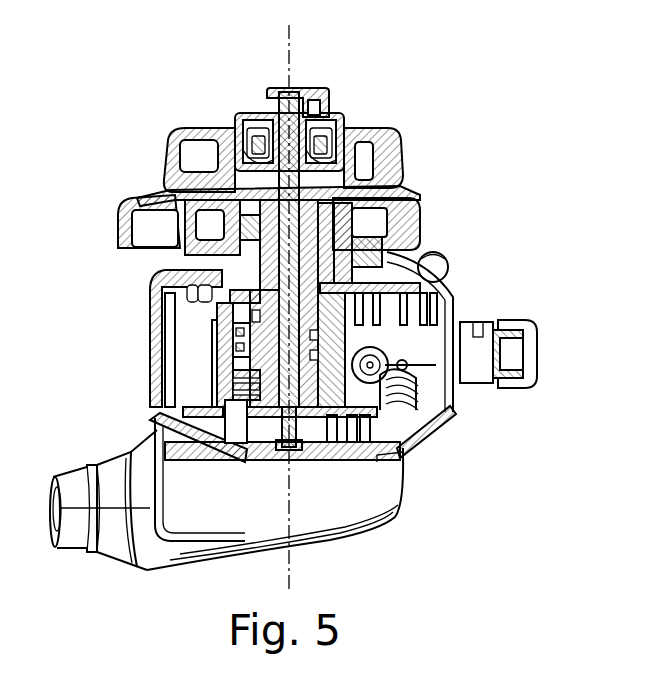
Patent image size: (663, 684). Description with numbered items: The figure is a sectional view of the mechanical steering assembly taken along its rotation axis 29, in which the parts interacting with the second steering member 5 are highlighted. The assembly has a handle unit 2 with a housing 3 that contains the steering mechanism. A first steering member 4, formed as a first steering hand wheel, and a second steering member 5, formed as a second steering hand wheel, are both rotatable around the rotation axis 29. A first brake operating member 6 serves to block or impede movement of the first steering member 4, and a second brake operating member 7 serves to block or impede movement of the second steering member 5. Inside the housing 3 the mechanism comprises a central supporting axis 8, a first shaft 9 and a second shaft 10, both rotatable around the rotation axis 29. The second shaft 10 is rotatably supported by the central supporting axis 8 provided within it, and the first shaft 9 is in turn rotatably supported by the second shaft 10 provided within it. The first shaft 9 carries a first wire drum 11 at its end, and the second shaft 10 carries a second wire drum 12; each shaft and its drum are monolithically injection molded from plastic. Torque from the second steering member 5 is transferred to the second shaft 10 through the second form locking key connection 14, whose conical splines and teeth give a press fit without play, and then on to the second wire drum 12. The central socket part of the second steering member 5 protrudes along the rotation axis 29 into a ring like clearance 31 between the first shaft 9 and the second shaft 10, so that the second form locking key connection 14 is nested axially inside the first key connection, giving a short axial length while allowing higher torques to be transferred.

The handle unit 2 is at (318, 487).
The housing 3 is at (360, 452).
The first steering member 4 is at (400, 187).
The second steering member 5 is at (383, 152).
The first brake operating member 6 is at (317, 90).
The second brake operating member 7 is at (432, 262).
The central supporting axis 8 is at (278, 425).
The first shaft 9 is at (245, 262).
The second shaft 10 is at (267, 303).
The first wire drum 11 is at (252, 318).
The second wire drum 12 is at (253, 437).
The second form locking key connection 14 is at (397, 202).
The rotation axis 29 is at (293, 66).
The ring like clearance 31 is at (262, 228).